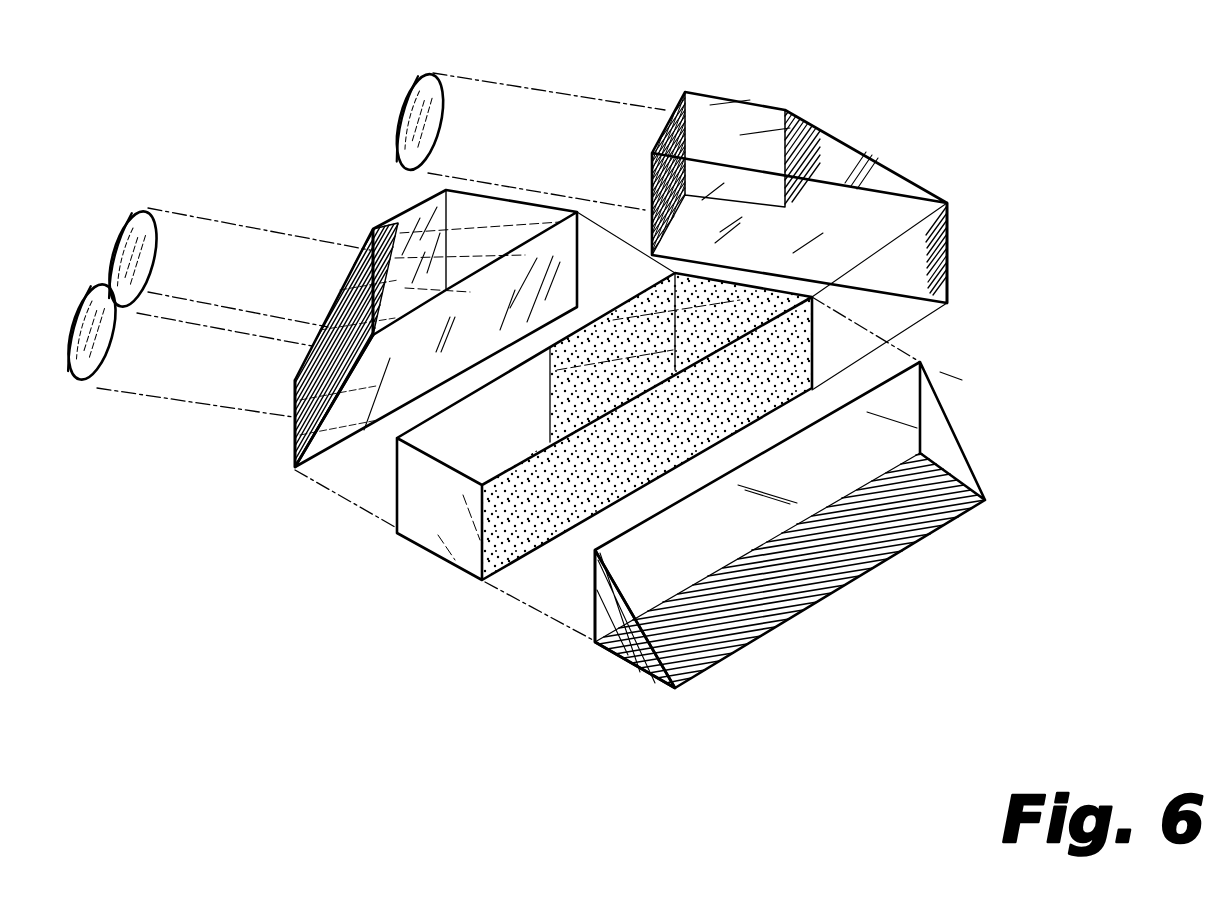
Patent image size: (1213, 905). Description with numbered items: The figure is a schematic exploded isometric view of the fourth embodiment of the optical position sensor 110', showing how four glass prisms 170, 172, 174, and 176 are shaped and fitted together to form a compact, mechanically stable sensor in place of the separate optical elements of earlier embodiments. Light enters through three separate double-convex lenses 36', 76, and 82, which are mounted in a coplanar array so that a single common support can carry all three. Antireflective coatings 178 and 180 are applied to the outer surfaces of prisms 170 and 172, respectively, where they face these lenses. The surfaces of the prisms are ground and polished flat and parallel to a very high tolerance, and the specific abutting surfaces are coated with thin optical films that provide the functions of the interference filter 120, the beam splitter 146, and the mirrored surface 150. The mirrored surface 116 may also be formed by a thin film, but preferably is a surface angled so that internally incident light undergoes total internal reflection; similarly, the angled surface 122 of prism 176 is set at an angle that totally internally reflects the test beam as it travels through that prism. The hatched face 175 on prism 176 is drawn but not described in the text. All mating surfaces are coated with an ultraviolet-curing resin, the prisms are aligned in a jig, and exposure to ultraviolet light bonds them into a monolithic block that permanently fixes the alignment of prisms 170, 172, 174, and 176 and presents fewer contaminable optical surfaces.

The position sensor 110' is at (624, 387).
The double-convex lens 36' is at (438, 96).
The double-convex lens 76 is at (138, 208).
The double-convex lens 82 is at (83, 388).
The mirrored surface 150 is at (397, 343).
The antireflective coating 180 is at (343, 303).
The glass prism 172 is at (290, 455).
The interference filter 120 is at (687, 456).
The beam splitter 146 is at (627, 330).
The glass prism 174 is at (604, 456).
The angled surface 122 is at (821, 559).
The reflective surface 175 is at (933, 492).
The glass prism 176 is at (655, 682).
The glass prism 170 is at (793, 169).
The antireflective coating 178 is at (668, 106).
The mirrored surface 116 is at (893, 207).